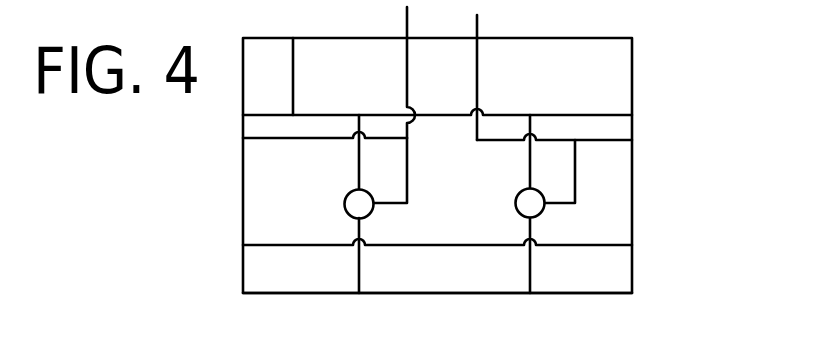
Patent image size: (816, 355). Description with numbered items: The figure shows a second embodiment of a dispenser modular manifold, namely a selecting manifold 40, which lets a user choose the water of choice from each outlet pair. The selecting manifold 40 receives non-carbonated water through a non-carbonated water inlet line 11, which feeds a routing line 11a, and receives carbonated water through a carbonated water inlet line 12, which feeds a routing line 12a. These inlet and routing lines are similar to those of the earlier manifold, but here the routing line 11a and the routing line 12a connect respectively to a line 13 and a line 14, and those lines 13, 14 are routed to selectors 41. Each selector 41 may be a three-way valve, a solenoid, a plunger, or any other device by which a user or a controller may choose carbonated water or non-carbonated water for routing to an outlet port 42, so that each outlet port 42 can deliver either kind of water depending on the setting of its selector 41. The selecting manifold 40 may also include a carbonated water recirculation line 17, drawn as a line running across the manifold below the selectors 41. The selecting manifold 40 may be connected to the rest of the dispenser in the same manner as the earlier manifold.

The non-carbonated water inlet line 11 is at (293, 62).
The routing line 11a is at (572, 115).
The carbonated water inlet line 12 is at (407, 50).
The routing line 12a is at (303, 139).
The line 13 is at (359, 153).
The line 14 is at (408, 158).
The carbonated water recirculation line 17 is at (456, 247).
The selecting manifold 40 is at (632, 293).
The selector 41 is at (345, 211).
The outlet port 42 is at (359, 293).